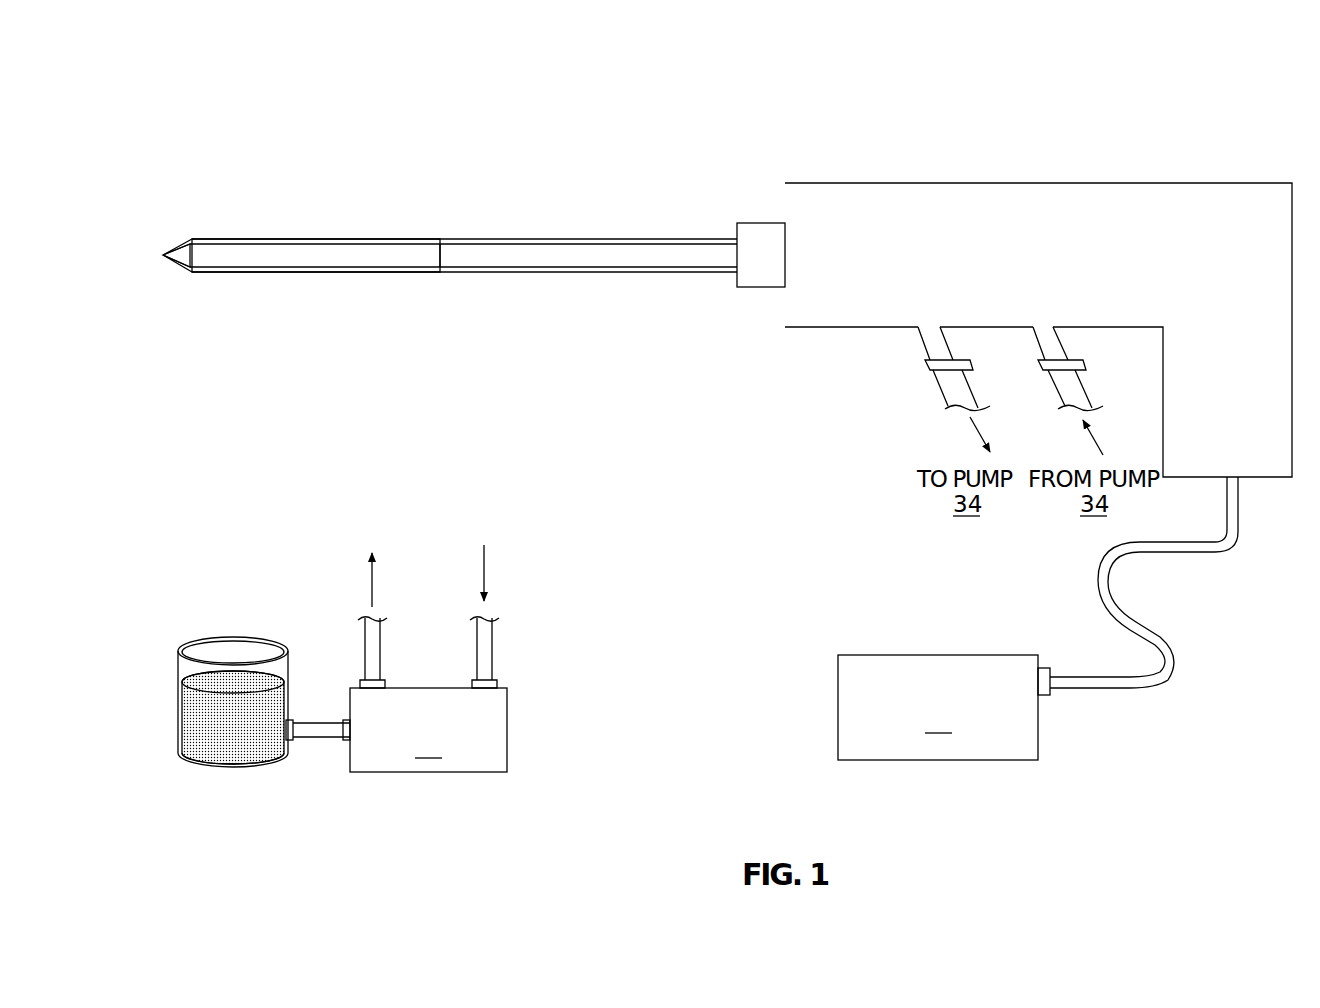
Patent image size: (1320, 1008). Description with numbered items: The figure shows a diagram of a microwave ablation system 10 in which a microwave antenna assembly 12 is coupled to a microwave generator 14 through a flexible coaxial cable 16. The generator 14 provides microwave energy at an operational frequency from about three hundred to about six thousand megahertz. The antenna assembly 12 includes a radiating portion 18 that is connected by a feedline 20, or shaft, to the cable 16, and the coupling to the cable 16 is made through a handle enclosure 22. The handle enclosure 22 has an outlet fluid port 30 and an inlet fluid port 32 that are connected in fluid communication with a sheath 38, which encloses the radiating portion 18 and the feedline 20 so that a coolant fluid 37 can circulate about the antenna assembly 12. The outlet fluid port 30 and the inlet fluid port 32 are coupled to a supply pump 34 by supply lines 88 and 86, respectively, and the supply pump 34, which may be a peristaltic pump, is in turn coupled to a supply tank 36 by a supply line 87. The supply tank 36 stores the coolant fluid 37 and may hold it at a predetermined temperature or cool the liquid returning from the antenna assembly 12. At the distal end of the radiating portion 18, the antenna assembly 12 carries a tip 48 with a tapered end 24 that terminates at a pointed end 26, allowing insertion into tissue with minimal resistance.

The microwave ablation system 10 is at (268, 92).
The microwave antenna assembly 12 is at (681, 170).
The microwave generator 14 is at (944, 707).
The flexible coaxial cable 16 is at (1097, 590).
The radiating portion 18 is at (297, 240).
The feedline 20 is at (557, 240).
The handle enclosure 22 is at (1118, 143).
The tapered end 24 is at (184, 241).
The pointed end 26 is at (163, 256).
The outlet fluid port 30 is at (920, 338).
The inlet fluid port 32 is at (1065, 338).
The supply pump 34 is at (428, 658).
The supply tank 36 is at (177, 695).
The coolant fluid 37 is at (180, 728).
The sheath 38 is at (722, 239).
The tip 48 is at (185, 271).
The supply line 86 is at (1080, 386).
The supply line 87 is at (325, 738).
The supply line 88 is at (948, 386).